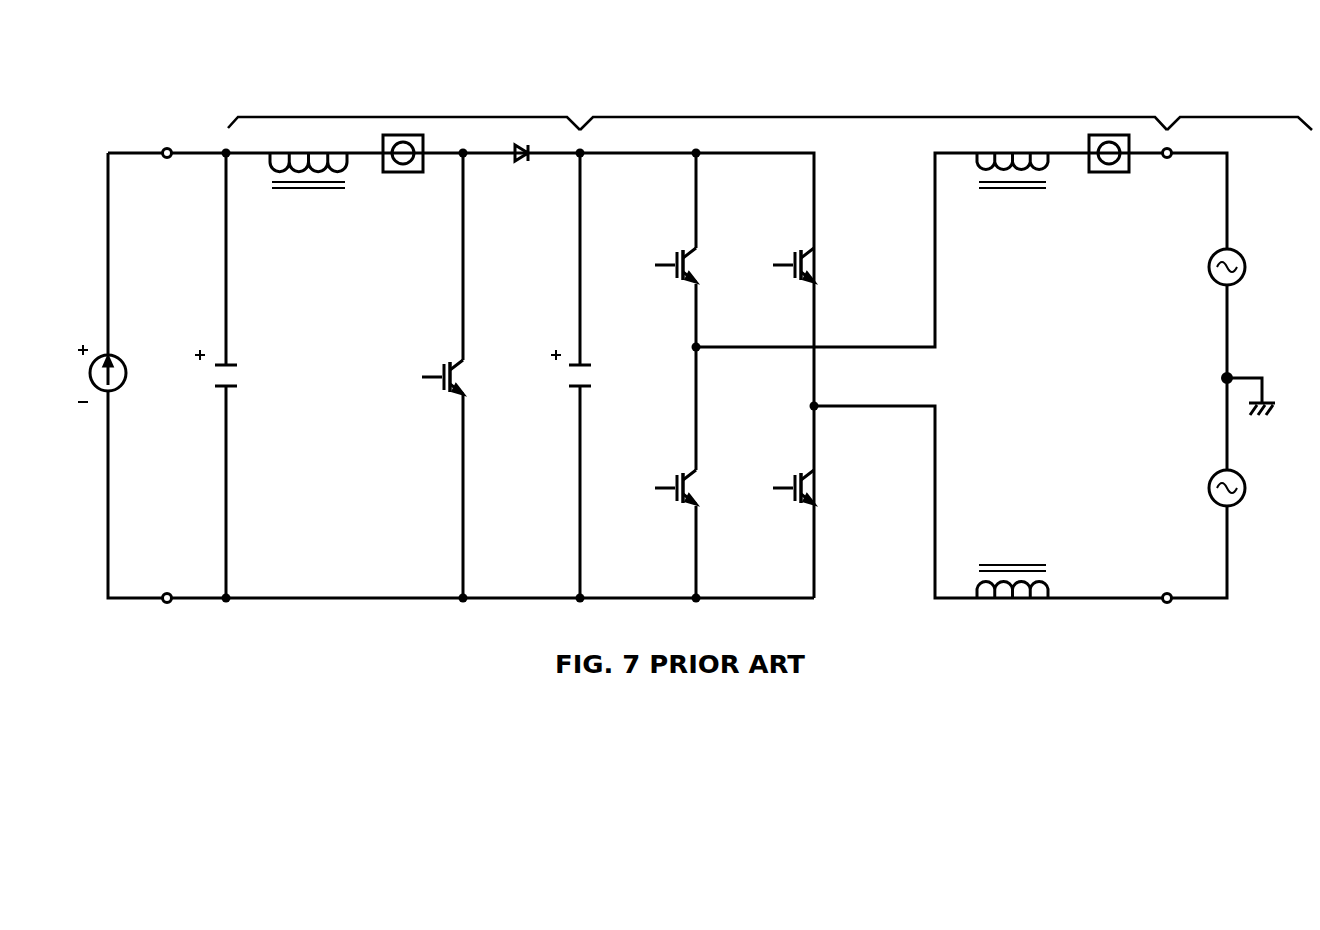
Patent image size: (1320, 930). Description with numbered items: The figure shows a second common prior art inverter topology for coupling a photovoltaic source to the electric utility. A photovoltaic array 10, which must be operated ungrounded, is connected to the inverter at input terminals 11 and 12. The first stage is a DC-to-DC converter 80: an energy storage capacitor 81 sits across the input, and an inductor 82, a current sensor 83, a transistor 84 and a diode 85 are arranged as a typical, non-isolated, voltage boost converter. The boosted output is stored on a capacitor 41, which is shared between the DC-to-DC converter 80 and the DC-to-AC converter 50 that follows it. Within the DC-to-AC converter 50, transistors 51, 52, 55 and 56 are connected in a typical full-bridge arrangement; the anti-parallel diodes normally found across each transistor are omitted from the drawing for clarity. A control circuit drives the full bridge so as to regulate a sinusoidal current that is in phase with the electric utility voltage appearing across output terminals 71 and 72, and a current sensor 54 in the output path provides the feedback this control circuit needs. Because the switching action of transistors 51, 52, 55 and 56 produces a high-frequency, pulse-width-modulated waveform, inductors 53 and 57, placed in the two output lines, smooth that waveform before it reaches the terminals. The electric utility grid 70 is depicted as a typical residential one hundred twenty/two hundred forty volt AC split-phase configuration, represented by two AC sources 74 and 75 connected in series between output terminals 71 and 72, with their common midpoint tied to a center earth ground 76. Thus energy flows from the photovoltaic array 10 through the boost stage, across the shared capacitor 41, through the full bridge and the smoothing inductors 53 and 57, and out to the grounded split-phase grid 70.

The photovoltaic array 10 is at (119, 373).
The input terminal 11 is at (166, 169).
The input terminal 12 is at (167, 586).
The capacitor 41 is at (587, 370).
The DC-to-AC converter 50 is at (873, 92).
The transistor 51 is at (693, 265).
The transistor 52 is at (693, 487).
The inductor 53 is at (1012, 187).
The current sensor 54 is at (1109, 171).
The transistor 55 is at (811, 265).
The transistor 56 is at (811, 487).
The inductor 57 is at (1012, 567).
The electric utility grid 70 is at (1239, 94).
The output terminal 71 is at (1171, 170).
The output terminal 72 is at (1172, 586).
The AC voltage source 74 is at (1245, 267).
The AC voltage source 75 is at (1245, 488).
The ground 76 is at (1267, 400).
The DC-to-DC converter 80 is at (404, 92).
The energy storage capacitor 81 is at (232, 369).
The inductor 82 is at (308, 187).
The current sensor 83 is at (403, 171).
The transistor 84 is at (461, 377).
The diode 85 is at (522, 171).